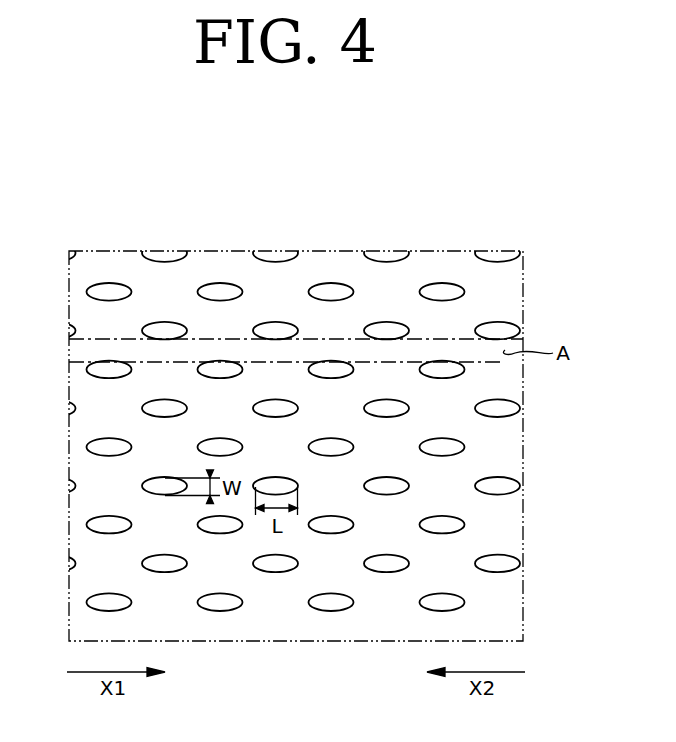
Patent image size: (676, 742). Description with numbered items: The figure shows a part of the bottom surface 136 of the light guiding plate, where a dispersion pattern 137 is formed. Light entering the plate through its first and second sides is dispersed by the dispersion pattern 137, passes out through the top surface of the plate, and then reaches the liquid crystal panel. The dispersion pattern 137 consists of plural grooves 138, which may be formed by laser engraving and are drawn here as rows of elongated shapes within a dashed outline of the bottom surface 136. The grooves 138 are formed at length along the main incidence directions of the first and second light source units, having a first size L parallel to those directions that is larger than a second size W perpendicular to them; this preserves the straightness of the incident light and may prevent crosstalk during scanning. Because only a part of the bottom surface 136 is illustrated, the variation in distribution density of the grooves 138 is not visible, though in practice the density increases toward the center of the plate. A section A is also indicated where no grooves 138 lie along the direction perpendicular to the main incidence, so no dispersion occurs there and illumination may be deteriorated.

The bottom surface 136 is at (329, 268).
The dispersion pattern 137 is at (276, 379).
The grooves 138 is at (111, 283).